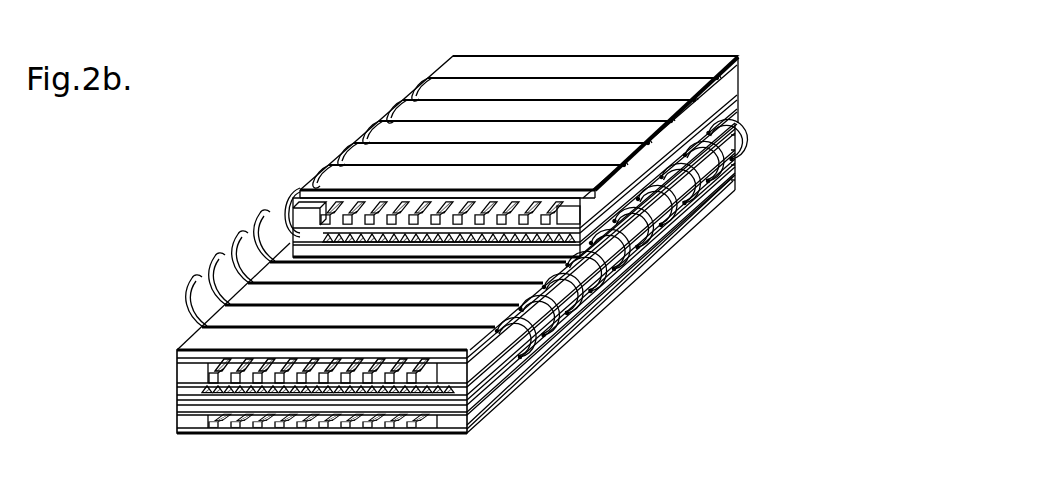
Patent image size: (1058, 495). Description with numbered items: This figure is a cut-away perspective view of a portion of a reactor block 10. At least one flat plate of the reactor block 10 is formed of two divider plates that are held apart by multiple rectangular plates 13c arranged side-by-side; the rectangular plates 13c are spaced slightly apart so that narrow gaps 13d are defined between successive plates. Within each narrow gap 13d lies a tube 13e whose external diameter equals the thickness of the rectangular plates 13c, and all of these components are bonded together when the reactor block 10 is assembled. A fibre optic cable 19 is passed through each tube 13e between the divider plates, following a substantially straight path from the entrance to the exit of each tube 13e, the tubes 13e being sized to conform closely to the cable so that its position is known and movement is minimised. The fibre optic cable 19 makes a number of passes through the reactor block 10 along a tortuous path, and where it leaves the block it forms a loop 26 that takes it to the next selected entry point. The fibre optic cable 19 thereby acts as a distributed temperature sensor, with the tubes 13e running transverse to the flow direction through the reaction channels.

The reactor block 10 is at (765, 149).
The rectangular plates 13c is at (581, 70).
The narrow gaps 13d is at (461, 100).
The tube 13e is at (694, 100).
The fibre optic cable 19 is at (662, 232).
The loop 26 is at (533, 355).